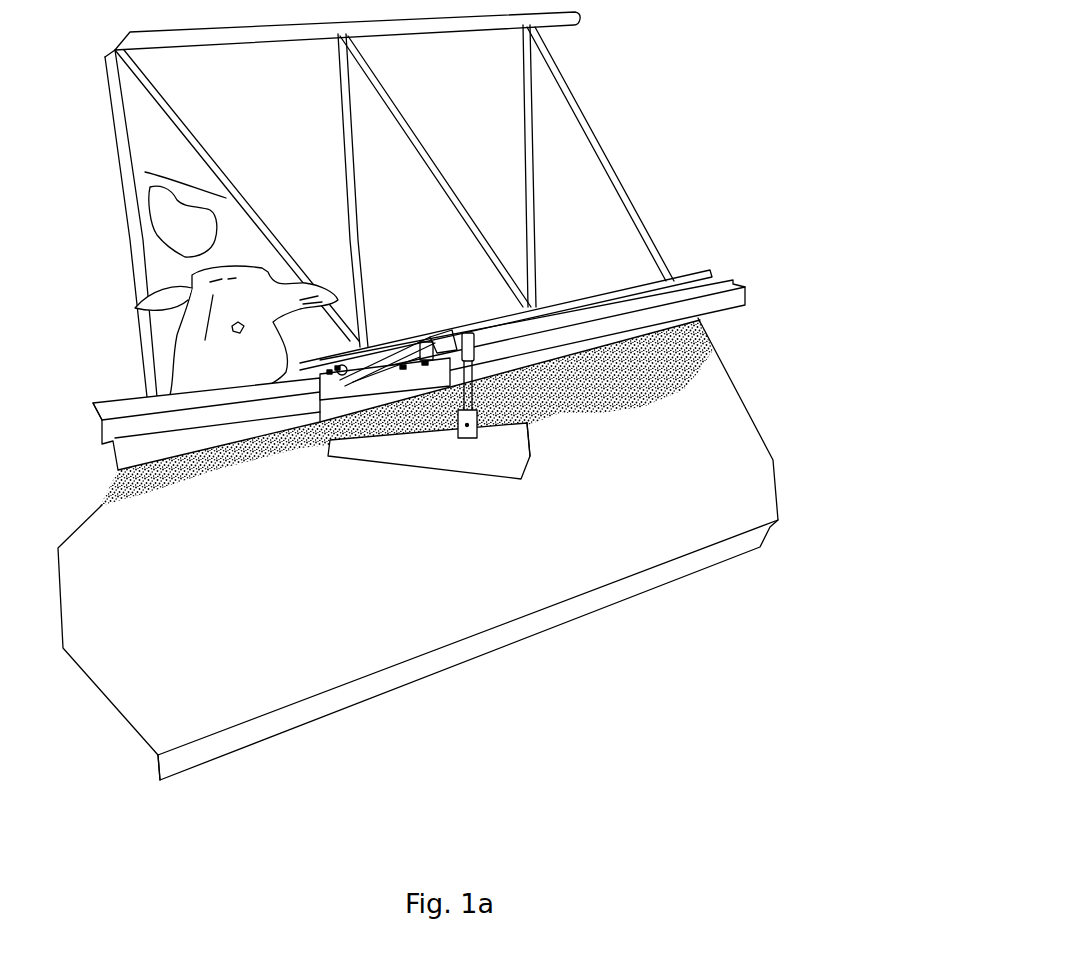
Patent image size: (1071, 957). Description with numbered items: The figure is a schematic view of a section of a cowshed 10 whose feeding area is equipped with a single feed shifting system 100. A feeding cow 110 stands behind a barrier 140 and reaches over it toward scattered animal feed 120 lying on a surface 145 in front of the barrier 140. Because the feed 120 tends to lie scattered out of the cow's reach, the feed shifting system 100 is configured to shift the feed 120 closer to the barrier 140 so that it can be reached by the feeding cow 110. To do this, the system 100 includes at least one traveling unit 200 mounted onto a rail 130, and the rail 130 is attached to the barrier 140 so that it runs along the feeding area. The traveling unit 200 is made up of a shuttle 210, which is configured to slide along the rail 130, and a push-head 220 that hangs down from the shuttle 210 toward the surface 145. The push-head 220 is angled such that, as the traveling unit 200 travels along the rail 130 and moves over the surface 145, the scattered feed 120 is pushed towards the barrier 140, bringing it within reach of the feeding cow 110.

The cowshed 10 is at (643, 144).
The feed shifting system 100 is at (469, 549).
The feeding cow 110 is at (262, 219).
The scattered animal feed 120 is at (150, 493).
The rail 130 is at (730, 278).
The barrier 140 is at (116, 472).
The surface 145 is at (483, 629).
The traveling unit 200 is at (453, 441).
The shuttle 210 is at (320, 445).
The push-head 220 is at (531, 457).